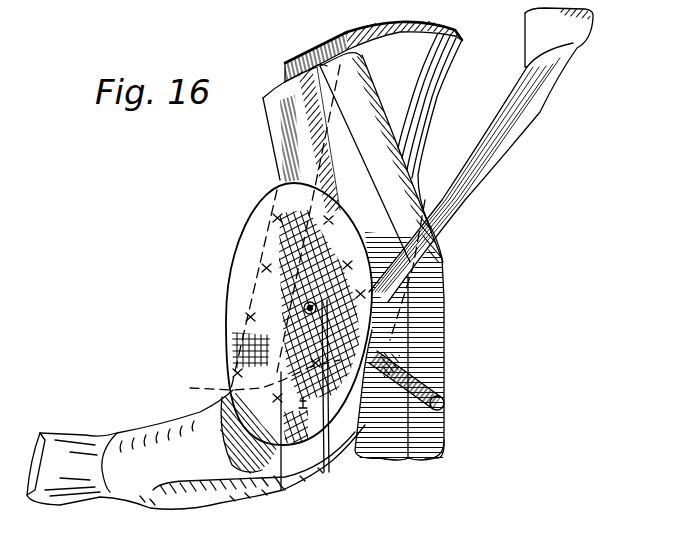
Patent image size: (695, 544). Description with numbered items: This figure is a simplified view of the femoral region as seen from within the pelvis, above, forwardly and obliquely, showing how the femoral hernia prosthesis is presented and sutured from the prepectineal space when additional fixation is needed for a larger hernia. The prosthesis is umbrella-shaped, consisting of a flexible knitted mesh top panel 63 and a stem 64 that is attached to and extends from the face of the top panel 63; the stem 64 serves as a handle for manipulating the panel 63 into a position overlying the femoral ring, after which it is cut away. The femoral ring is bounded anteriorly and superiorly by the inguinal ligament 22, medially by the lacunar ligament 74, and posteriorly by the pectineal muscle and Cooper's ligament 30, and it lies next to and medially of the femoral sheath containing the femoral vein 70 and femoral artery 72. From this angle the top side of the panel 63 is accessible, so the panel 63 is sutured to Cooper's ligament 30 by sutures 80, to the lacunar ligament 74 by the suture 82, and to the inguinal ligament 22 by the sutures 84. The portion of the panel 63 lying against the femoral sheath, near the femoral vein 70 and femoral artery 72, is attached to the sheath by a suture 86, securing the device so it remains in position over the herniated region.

The inguinal ligament 22 is at (462, 200).
The Cooper's ligament 30 is at (283, 160).
The top panel 63 is at (242, 348).
The stem 64 is at (407, 367).
The femoral vein 70 is at (300, 115).
The femoral artery 72 is at (390, 157).
The lacunar ligament 74 is at (249, 377).
The sutures 80 is at (249, 317).
The suture 82 is at (284, 441).
The sutures 84 is at (336, 396).
The suture 86 is at (347, 264).